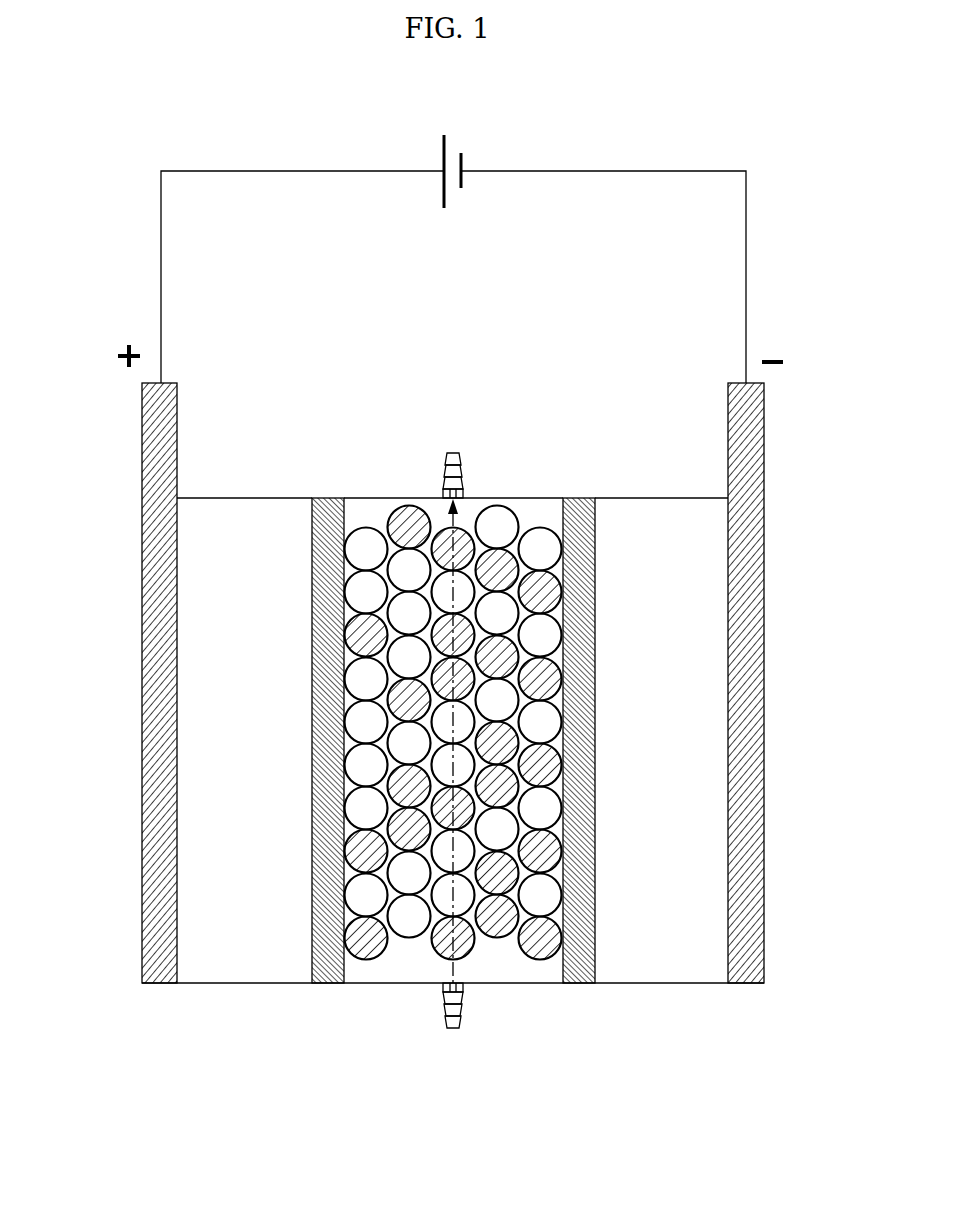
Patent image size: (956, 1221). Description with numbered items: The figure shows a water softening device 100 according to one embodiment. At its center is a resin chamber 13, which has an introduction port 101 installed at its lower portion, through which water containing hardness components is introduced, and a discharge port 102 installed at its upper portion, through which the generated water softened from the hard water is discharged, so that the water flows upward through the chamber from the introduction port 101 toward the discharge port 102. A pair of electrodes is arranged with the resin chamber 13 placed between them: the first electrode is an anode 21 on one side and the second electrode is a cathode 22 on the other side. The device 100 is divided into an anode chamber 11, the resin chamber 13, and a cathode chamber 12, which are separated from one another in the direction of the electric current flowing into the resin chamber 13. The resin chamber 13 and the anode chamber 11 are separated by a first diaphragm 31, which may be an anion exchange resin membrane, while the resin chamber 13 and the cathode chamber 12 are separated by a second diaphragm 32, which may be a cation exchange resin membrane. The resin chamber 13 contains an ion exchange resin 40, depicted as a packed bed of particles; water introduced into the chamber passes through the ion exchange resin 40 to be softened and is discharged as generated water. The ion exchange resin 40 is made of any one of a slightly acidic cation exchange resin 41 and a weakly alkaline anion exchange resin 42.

The water softening device 100 is at (118, 150).
The anode 21 is at (142, 405).
The cathode 22 is at (764, 410).
The anode chamber 11 is at (240, 497).
The cathode chamber 12 is at (658, 497).
The resin chamber 13 is at (398, 497).
The first diaphragm 31 is at (330, 497).
The second diaphragm 32 is at (576, 497).
The ion exchange resin 40 is at (512, 968).
The slightly acidic cation exchange resin 41 is at (365, 960).
The weakly alkaline anion exchange resin 42 is at (409, 938).
The introduction port 101 is at (461, 1022).
The discharge port 102 is at (463, 460).